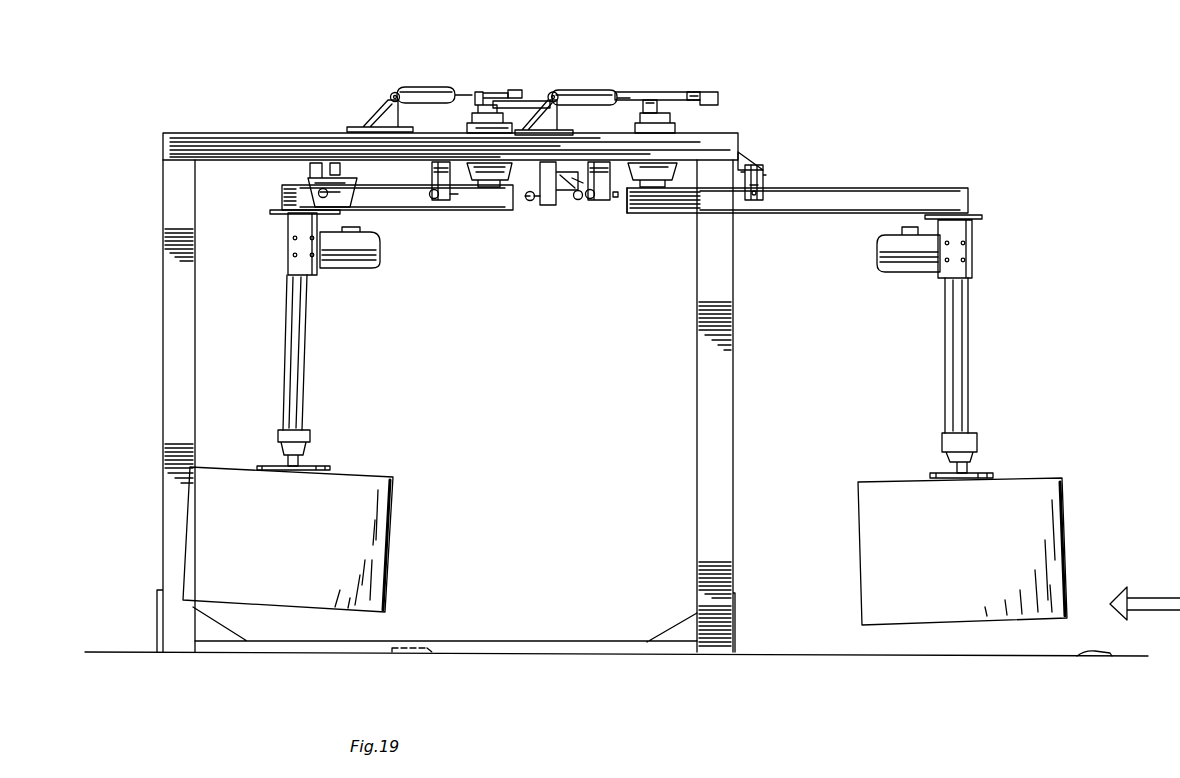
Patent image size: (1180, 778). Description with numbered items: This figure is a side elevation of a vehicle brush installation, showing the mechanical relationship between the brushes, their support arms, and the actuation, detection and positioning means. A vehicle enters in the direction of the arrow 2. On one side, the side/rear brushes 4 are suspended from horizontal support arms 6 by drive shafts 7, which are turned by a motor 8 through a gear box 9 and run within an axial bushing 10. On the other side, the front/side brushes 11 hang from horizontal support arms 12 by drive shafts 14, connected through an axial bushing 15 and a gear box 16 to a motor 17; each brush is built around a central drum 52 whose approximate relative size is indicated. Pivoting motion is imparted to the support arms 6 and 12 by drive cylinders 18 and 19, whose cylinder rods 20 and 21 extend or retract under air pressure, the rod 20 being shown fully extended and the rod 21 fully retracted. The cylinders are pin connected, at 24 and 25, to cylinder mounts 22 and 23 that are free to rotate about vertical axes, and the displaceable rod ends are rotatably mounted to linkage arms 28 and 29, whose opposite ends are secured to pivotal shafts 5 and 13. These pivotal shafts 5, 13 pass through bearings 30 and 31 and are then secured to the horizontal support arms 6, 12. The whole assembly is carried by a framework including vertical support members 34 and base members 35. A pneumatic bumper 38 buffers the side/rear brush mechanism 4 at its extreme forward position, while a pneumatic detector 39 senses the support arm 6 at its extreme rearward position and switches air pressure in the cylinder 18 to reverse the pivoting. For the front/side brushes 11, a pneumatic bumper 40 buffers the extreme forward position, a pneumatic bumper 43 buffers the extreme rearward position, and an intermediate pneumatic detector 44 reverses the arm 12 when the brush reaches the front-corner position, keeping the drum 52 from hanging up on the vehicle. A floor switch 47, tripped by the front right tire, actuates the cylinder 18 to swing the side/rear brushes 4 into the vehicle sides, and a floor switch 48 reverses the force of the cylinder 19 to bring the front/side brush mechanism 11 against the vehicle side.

The arrow 2 is at (1112, 590).
The side/rear brushes 4 is at (1067, 520).
The pivotal shafts 5 is at (663, 115).
The horizontal support arms 6 is at (828, 188).
The drive shafts 7 is at (977, 462).
The motor 8 is at (892, 242).
The gear box 9 is at (965, 245).
The axial bushing 10 is at (968, 328).
The front/side brushes 11 is at (390, 522).
The horizontal support arms 12 is at (400, 200).
The pivotal shaft 13 is at (479, 92).
The drive shafts 14 is at (307, 463).
The axial bushing 15 is at (308, 365).
The gear box 16 is at (292, 267).
The motor 17 is at (352, 268).
The drive cylinder 18 is at (600, 90).
The drive cylinder 19 is at (433, 87).
The cylinder rod 20 is at (633, 92).
The cylinder rod 21 is at (510, 90).
The cylinder mount 22 is at (550, 92).
The cylinder mount 23 is at (380, 112).
The pin connection 24 is at (556, 92).
The pin connection 25 is at (395, 92).
The linkage arm 28 is at (708, 88).
The linkage arm 29 is at (540, 98).
The bearing 30 is at (633, 213).
The bearing 31 is at (503, 198).
The vertical support members 34 is at (165, 293).
The base members 35 is at (542, 642).
The pneumatic bumper 38 is at (765, 180).
The pneumatic detector 39 is at (602, 205).
The pneumatic bumper 40 is at (563, 207).
The pneumatic bumper 43 is at (320, 177).
The intermediate pneumatic detector 44 is at (452, 203).
The floor switch 47 is at (1077, 653).
The floor switch 48 is at (427, 648).
The central drum 52 is at (327, 470).